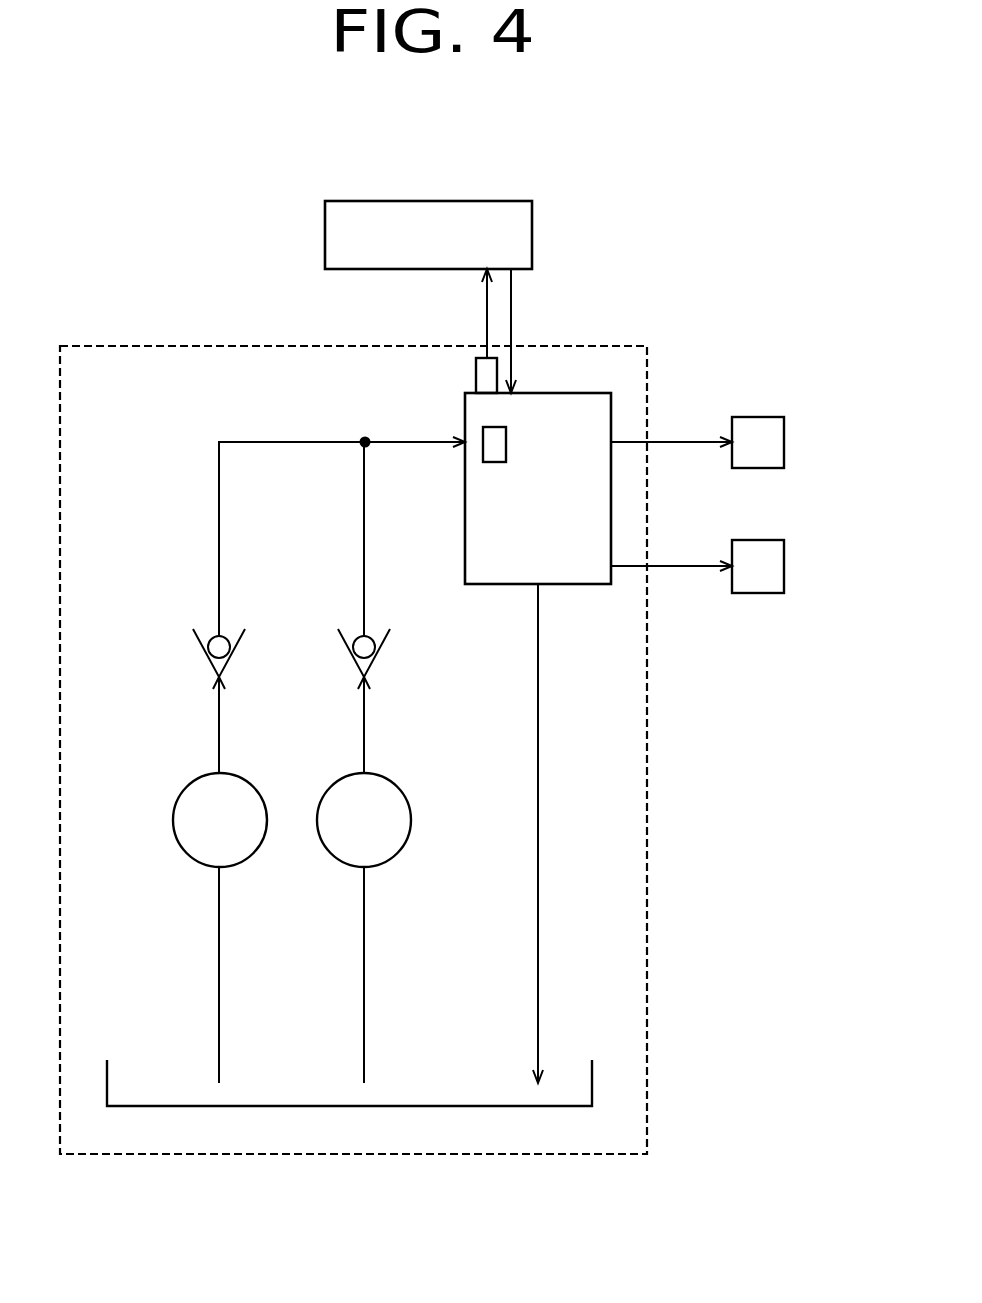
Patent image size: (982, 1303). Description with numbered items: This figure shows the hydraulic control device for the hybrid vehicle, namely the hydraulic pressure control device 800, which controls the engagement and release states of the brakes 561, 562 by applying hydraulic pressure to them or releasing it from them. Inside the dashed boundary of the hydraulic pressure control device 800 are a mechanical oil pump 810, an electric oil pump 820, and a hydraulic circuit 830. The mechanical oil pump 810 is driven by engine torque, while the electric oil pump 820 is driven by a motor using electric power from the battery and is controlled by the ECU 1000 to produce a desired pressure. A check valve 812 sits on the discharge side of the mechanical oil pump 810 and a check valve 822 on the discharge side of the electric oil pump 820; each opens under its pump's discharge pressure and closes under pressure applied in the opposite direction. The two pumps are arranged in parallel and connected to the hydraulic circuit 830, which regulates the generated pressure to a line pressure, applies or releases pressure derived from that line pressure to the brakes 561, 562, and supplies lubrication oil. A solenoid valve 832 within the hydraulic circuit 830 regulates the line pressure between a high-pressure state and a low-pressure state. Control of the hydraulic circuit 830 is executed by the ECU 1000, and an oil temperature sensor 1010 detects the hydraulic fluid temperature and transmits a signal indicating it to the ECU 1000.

The ECU 1000 is at (487, 201).
The hydraulic pressure control device 800 is at (568, 347).
The oil temperature sensor 1010 is at (476, 383).
The hydraulic circuit 830 is at (570, 586).
The solenoid valve 832 is at (505, 427).
The check valve 812 is at (226, 636).
The check valve 822 is at (371, 636).
The mechanical oil pump 810 is at (254, 786).
The electric oil pump 820 is at (399, 786).
The brake 561 is at (828, 438).
The brake 562 is at (828, 564).